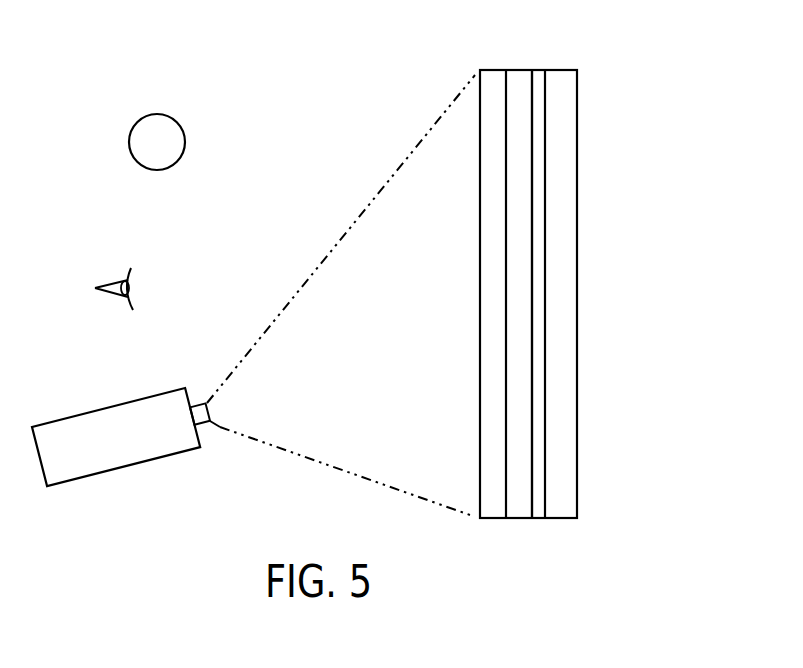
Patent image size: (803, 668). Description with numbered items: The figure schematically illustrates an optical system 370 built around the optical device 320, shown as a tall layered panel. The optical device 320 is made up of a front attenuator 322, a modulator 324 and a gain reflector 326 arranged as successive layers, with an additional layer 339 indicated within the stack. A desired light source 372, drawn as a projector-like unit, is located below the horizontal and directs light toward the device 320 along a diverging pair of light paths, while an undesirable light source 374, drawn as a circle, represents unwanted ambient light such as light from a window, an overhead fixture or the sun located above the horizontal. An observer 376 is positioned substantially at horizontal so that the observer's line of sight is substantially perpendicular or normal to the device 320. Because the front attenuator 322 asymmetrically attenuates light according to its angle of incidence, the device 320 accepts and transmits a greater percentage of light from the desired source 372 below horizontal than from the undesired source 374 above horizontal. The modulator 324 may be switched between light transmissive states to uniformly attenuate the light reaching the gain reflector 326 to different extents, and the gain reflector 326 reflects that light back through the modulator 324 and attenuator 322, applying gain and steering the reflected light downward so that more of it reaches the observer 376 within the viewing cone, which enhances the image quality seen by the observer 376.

The optical system 370 is at (272, 90).
The optical device 320 is at (495, 66).
The front attenuator 322 is at (493, 520).
The modulator 324 is at (517, 519).
The gain reflector 326 is at (560, 519).
The interface layer 339 is at (533, 333).
The desired light source 372 is at (127, 400).
The undesirable light source 374 is at (163, 170).
The observer 376 is at (112, 285).